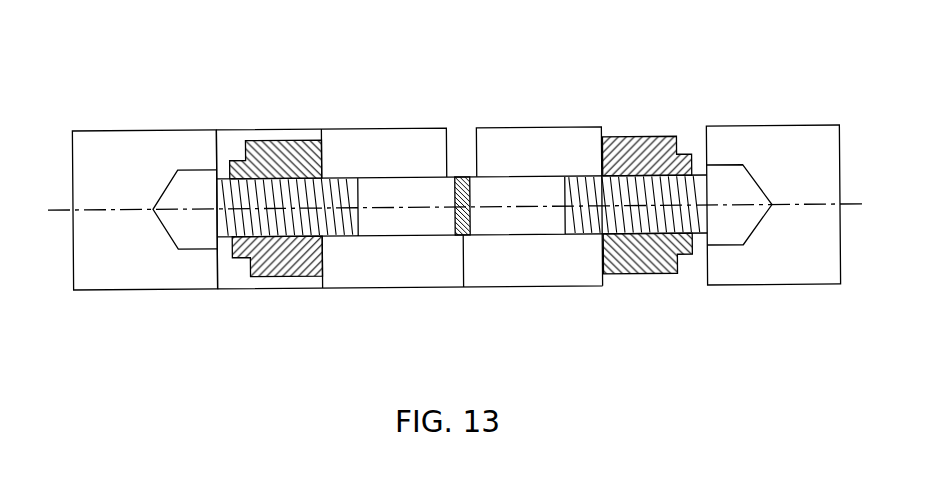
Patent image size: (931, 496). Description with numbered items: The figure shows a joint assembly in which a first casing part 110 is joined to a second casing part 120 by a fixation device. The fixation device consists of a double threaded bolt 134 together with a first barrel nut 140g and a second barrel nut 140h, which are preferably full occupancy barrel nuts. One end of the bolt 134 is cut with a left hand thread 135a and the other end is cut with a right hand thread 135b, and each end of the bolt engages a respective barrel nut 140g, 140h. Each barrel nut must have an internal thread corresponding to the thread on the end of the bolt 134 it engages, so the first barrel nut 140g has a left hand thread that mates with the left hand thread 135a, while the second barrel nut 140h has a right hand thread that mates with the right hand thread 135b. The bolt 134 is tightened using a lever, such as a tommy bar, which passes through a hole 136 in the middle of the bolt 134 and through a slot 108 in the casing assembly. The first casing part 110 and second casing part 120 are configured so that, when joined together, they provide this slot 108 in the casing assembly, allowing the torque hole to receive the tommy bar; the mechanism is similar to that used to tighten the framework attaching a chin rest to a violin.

The slot 108 is at (465, 150).
The first casing part 110 is at (110, 268).
The second casing part 120 is at (778, 267).
The double threaded bolt 134 is at (518, 195).
The left hand thread 135a is at (270, 265).
The right hand thread 135b is at (656, 270).
The hole 136 is at (460, 235).
The first barrel nut 140g is at (262, 132).
The second barrel nut 140h is at (642, 137).